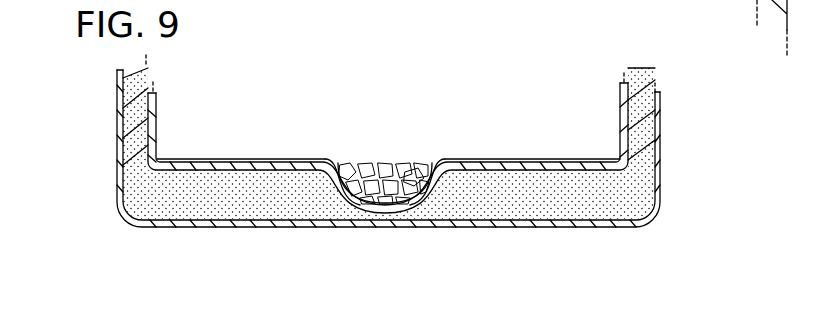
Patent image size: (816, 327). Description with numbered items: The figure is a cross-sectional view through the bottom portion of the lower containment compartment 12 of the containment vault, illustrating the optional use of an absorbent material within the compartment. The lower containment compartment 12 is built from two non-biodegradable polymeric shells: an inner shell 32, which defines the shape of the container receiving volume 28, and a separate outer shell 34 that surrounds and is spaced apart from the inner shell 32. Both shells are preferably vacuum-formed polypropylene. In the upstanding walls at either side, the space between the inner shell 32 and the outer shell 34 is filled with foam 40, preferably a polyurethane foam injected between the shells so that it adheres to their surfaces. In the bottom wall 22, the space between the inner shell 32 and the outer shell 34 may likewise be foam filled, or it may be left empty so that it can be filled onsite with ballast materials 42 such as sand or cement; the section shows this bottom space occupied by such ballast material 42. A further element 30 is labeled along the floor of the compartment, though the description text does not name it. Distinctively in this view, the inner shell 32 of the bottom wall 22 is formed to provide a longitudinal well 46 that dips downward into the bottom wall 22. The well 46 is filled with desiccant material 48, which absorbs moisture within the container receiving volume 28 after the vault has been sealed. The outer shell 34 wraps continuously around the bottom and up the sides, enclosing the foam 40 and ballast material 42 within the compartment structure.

The lower containment compartment 12 is at (563, 66).
The bottom wall 22 is at (464, 158).
The container receiving volume 28 is at (363, 98).
The floor surface 30 is at (235, 158).
The inner shell 32 is at (156, 126).
The outer shell 34 is at (120, 120).
The foam 40 is at (128, 88).
The ballast materials 42 is at (244, 200).
The longitudinal well 46 is at (422, 180).
The desiccant material 48 is at (383, 177).